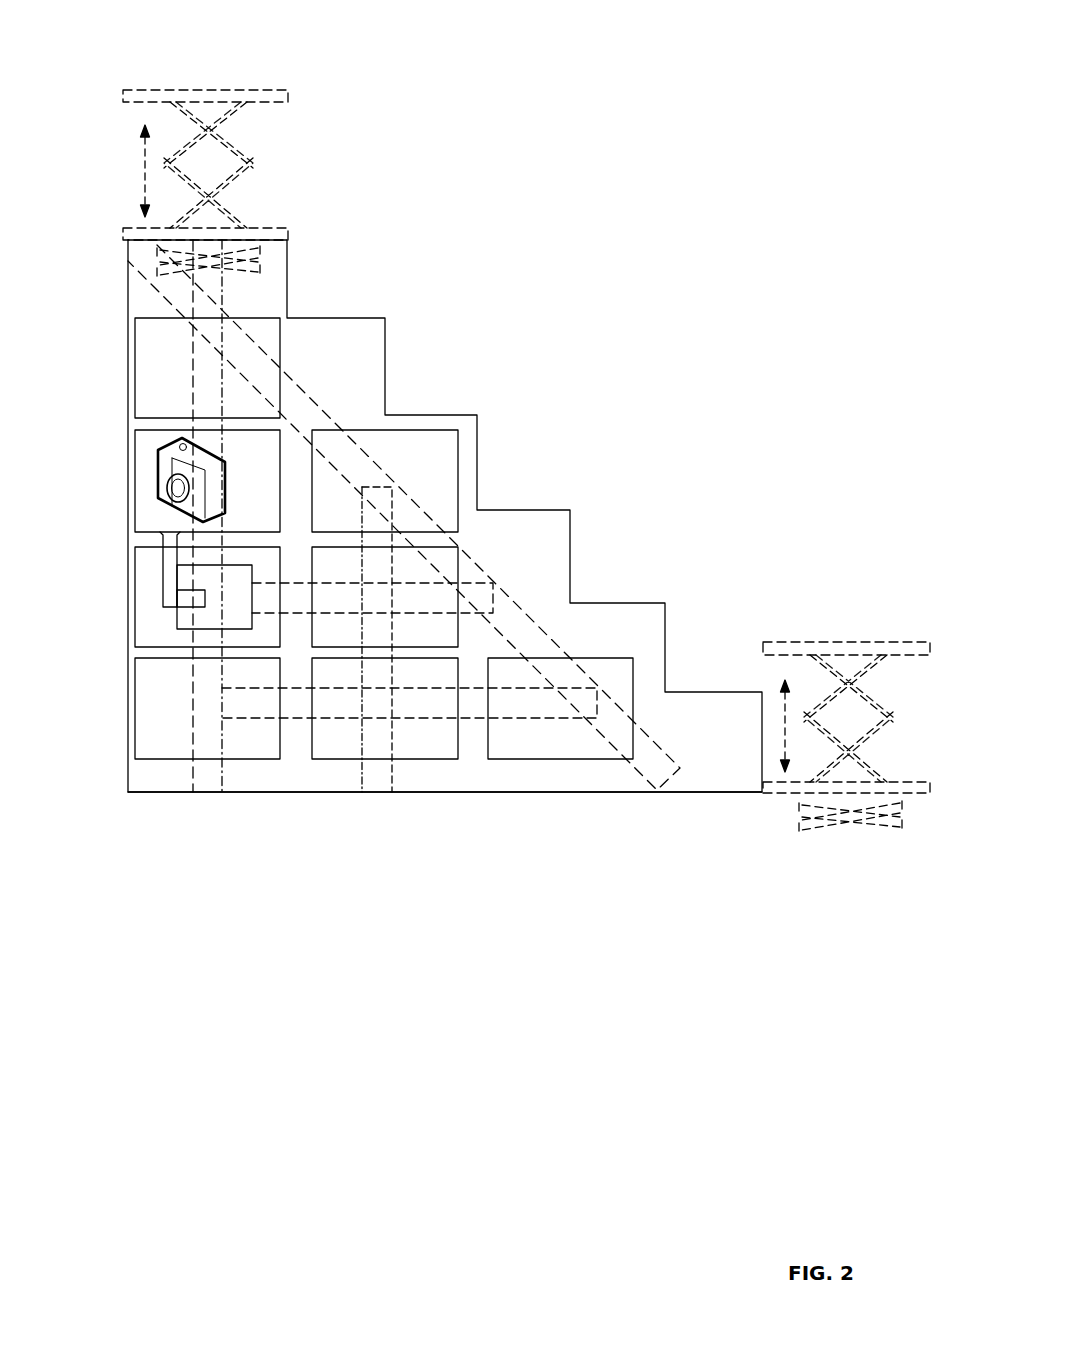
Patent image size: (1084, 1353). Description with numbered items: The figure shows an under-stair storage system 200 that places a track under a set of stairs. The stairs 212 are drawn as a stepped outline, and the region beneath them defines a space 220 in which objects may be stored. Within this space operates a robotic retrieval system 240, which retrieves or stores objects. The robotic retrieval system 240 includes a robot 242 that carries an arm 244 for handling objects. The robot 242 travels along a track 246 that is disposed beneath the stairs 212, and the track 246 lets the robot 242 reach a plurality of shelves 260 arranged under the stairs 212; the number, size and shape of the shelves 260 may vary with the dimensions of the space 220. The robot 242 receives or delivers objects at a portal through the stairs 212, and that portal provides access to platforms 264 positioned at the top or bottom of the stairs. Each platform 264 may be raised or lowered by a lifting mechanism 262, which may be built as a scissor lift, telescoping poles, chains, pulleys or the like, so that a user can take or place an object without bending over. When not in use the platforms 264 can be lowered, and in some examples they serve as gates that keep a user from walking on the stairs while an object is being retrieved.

The under-stair storage system 200 is at (737, 76).
The stairs 212 is at (632, 567).
The space 220 is at (692, 776).
The robotic retrieval system 240 is at (300, 830).
The robot 242 is at (183, 618).
The arm 244 is at (167, 563).
The track 246 is at (197, 320).
The shelves 260 is at (140, 397).
The lifting mechanism 262 is at (228, 182).
The platforms 264 is at (190, 90).